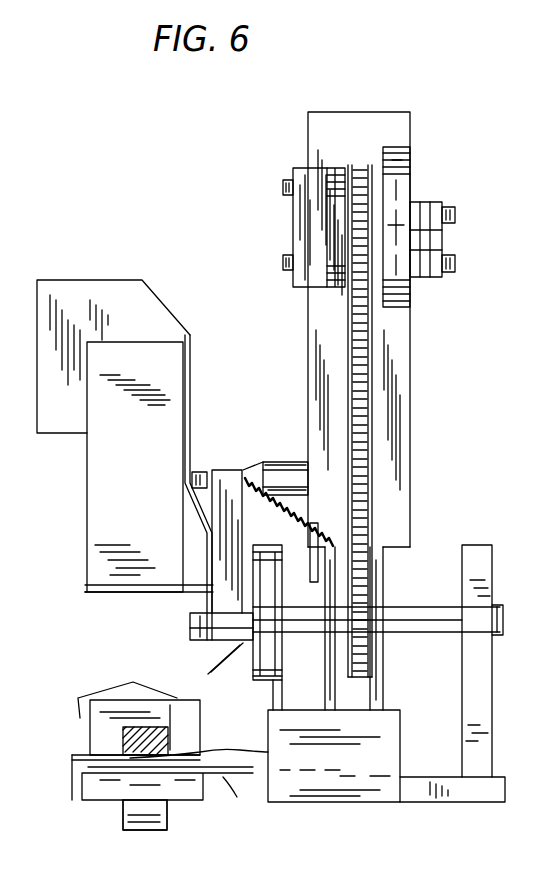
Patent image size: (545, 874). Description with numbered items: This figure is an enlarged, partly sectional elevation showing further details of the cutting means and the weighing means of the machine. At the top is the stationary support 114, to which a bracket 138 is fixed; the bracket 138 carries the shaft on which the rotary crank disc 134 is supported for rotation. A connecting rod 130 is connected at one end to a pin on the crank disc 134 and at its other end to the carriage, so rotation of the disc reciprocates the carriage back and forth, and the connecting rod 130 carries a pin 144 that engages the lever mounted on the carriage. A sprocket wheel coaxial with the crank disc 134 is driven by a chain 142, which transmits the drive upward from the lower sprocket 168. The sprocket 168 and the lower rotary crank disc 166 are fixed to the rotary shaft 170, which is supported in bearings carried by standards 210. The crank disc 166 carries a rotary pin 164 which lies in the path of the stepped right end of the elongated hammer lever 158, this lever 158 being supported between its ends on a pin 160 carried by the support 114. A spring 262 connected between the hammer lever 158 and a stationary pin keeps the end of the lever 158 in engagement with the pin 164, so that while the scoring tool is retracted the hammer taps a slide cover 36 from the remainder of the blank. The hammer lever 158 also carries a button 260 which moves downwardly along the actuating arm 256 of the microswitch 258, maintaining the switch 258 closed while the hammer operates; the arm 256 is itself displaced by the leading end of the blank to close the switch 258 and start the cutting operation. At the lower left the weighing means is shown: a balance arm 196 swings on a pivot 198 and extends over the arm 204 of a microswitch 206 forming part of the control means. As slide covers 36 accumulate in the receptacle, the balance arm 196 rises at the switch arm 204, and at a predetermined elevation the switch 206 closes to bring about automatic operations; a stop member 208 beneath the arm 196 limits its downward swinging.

The slide cover 36 is at (197, 688).
The stationary support 114 is at (405, 389).
The connecting rod 130 is at (435, 240).
The rotary crank disc 134 is at (402, 152).
The bracket 138 is at (294, 172).
The chain 142 is at (372, 470).
The pin 144 is at (415, 210).
The lever 158 is at (225, 547).
The pin 160 is at (283, 462).
The rotary pin 164 is at (190, 625).
The rotary crank disc 166 is at (282, 660).
The sprocket 168 is at (385, 560).
The rotary shaft 170 is at (427, 625).
The balance arm 196 is at (123, 727).
The pivot 198 is at (195, 716).
The arm 204 is at (112, 816).
The microswitch 206 is at (386, 756).
The stop member 208 is at (233, 803).
The standard 210 is at (498, 537).
The actuating arm 256 is at (190, 440).
The microswitch 258 is at (165, 336).
The button 260 is at (200, 472).
The spring 262 is at (273, 516).